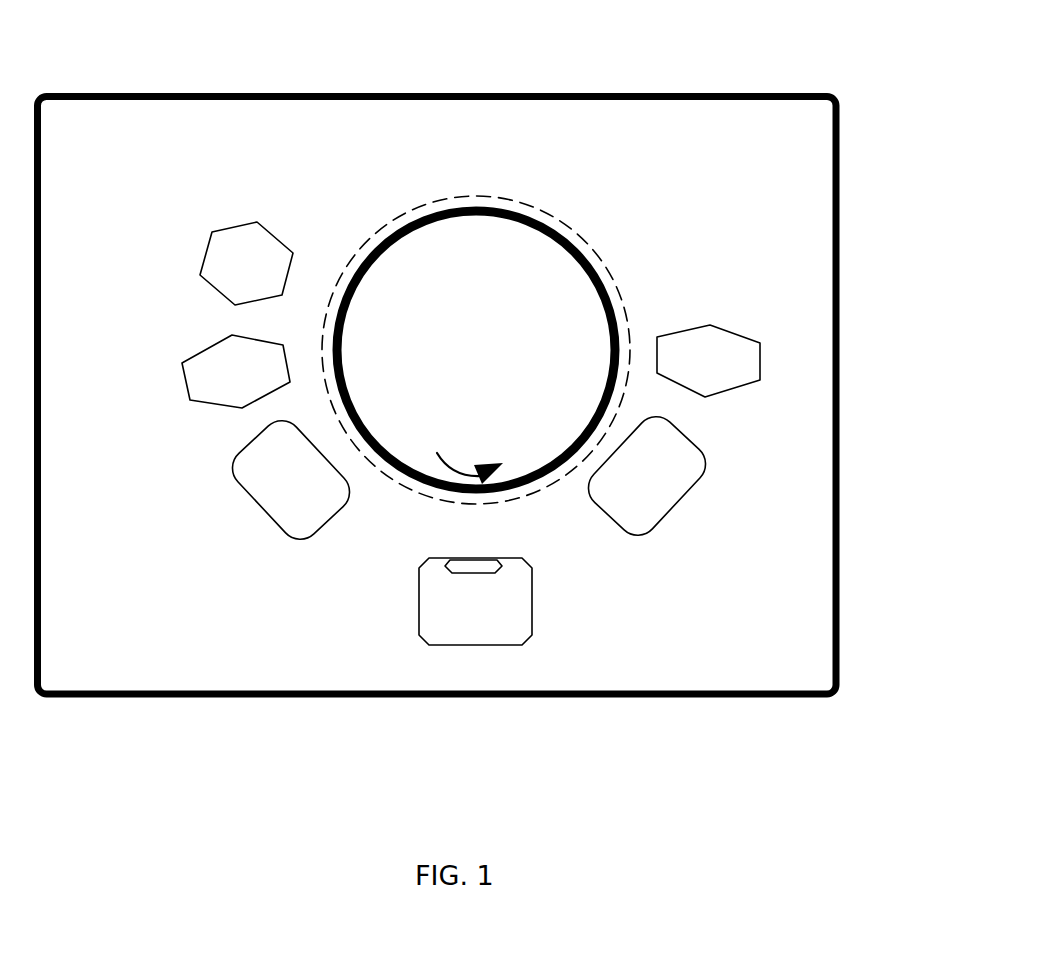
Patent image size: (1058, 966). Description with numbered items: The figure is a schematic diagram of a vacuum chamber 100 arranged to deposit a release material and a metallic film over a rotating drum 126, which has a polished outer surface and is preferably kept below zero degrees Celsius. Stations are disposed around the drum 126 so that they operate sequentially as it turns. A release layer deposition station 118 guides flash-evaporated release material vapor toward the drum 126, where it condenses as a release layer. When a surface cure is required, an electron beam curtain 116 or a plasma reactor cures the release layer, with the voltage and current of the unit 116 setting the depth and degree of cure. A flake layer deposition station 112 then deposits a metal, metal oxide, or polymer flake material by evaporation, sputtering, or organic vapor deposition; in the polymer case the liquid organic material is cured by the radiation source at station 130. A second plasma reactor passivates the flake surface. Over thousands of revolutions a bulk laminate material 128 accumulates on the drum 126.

The vacuum chamber 100 is at (596, 48).
The flake layer deposition station 112 is at (432, 601).
The electron beam curtain 116 is at (215, 375).
The release layer deposition station 118 is at (210, 287).
The rotating drum 126 is at (340, 377).
The bulk laminate material 128 is at (603, 268).
The radiation source station 130 is at (693, 343).